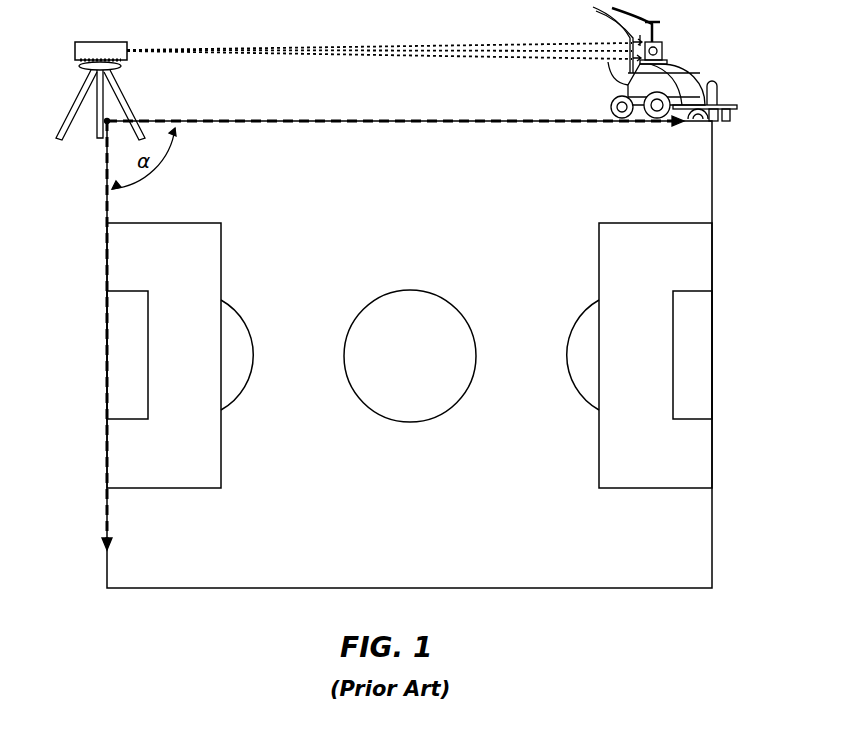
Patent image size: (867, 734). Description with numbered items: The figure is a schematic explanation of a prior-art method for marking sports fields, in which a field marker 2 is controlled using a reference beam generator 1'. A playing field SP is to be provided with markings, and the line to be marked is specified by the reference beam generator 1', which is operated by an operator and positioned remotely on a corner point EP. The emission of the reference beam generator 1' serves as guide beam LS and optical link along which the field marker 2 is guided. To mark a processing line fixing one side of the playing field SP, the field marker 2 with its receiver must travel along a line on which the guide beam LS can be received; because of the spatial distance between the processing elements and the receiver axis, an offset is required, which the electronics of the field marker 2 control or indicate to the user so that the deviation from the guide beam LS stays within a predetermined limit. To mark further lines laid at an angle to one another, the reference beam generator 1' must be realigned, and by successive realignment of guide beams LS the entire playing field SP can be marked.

The reference beam generator 1' is at (339, 74).
The field marker 2 is at (608, 62).
The playing field SP is at (513, 283).
The guide beam LS is at (395, 102).
The corner point EP is at (83, 335).